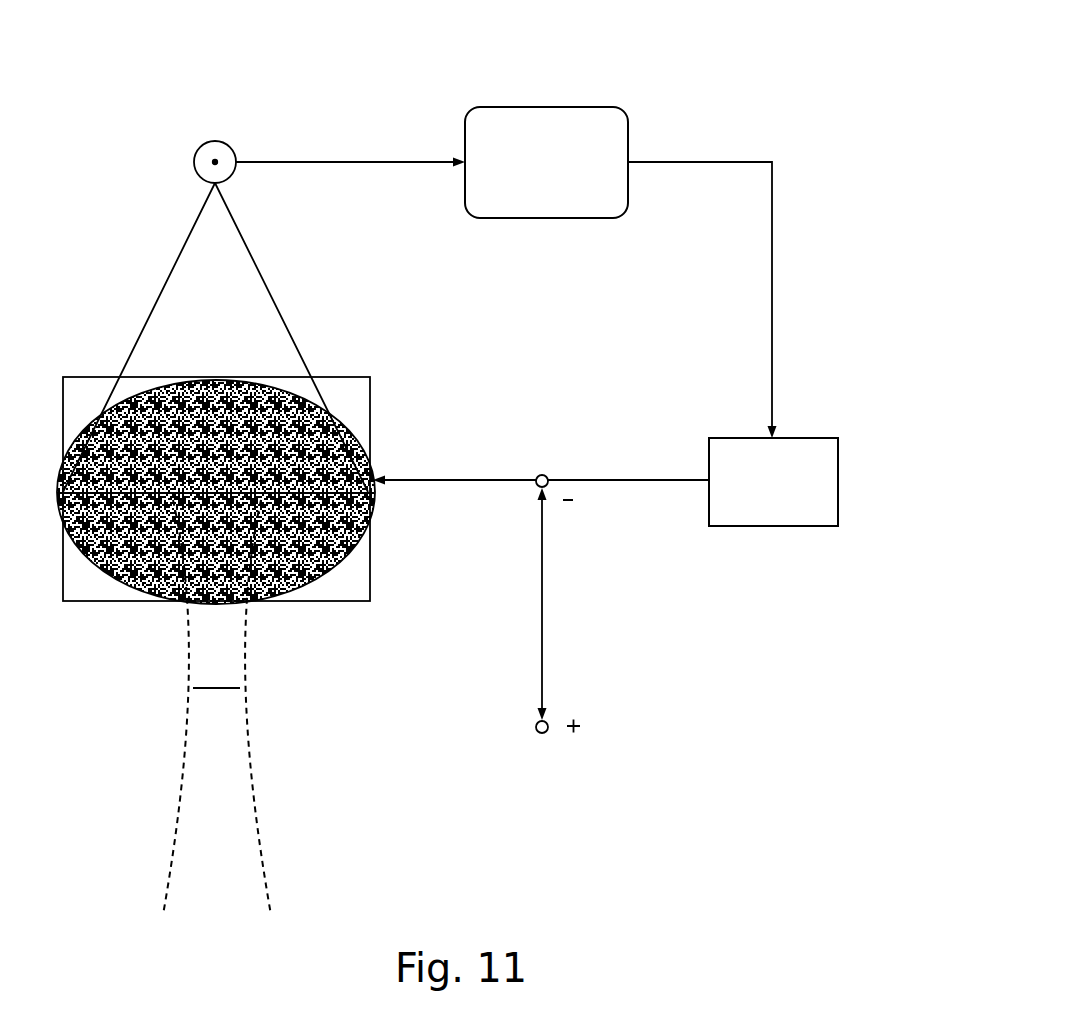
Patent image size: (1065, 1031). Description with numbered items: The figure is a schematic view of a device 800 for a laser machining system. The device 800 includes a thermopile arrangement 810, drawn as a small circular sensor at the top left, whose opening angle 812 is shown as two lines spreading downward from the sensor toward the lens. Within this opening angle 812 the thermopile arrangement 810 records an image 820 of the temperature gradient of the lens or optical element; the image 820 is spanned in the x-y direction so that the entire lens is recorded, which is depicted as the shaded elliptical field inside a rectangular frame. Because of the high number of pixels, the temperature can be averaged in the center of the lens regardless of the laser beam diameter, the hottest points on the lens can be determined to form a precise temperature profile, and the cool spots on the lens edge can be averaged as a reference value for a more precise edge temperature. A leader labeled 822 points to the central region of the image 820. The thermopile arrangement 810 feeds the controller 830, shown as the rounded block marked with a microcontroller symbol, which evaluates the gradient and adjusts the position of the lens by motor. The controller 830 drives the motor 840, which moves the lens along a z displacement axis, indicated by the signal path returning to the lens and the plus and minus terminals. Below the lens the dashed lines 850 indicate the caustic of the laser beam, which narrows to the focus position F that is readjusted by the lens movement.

The device 800 is at (742, 46).
The thermopile arrangement 810 is at (195, 168).
The opening angle 812 is at (269, 290).
The image 820 is at (65, 603).
The mirror reflective surface 822 is at (218, 495).
The controller 830 is at (630, 140).
The motor 840 is at (838, 485).
The caustic of the laser beam 850 is at (263, 858).
The focus position F is at (193, 688).